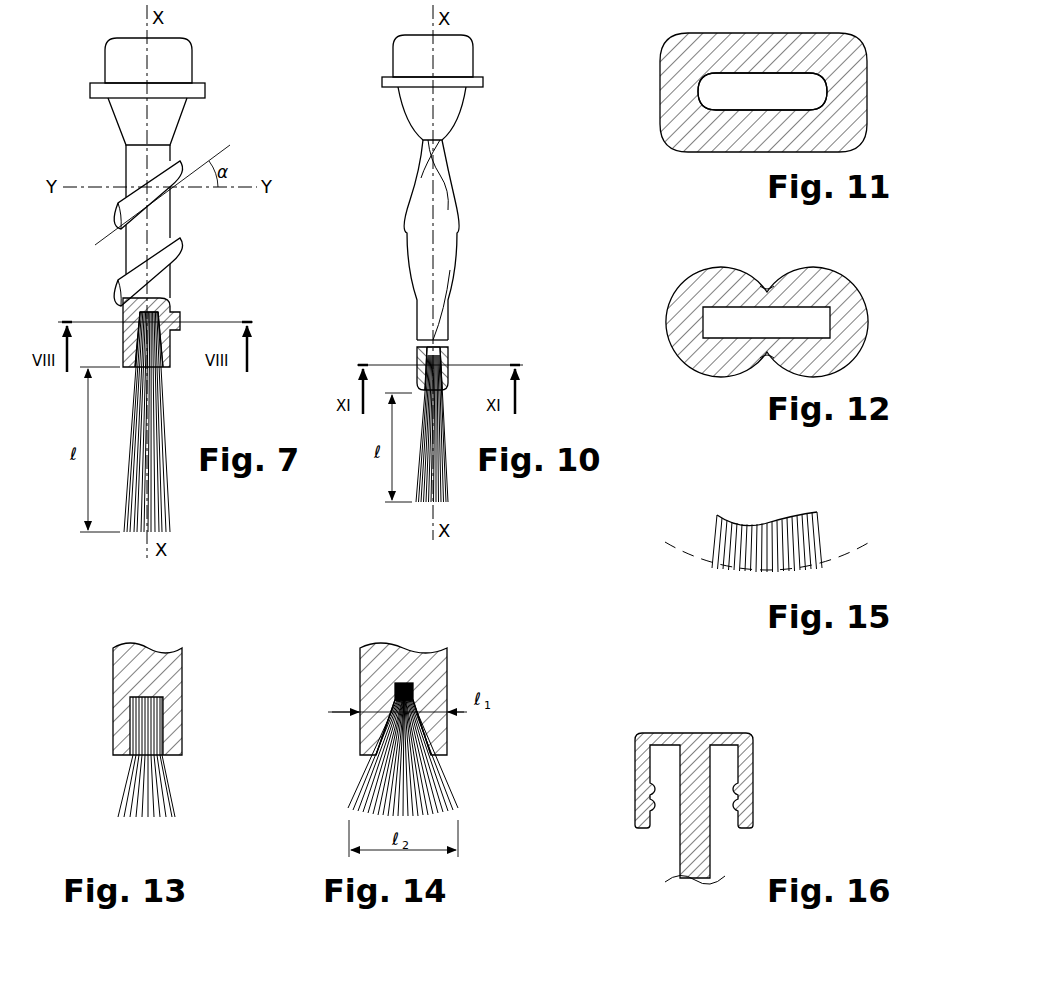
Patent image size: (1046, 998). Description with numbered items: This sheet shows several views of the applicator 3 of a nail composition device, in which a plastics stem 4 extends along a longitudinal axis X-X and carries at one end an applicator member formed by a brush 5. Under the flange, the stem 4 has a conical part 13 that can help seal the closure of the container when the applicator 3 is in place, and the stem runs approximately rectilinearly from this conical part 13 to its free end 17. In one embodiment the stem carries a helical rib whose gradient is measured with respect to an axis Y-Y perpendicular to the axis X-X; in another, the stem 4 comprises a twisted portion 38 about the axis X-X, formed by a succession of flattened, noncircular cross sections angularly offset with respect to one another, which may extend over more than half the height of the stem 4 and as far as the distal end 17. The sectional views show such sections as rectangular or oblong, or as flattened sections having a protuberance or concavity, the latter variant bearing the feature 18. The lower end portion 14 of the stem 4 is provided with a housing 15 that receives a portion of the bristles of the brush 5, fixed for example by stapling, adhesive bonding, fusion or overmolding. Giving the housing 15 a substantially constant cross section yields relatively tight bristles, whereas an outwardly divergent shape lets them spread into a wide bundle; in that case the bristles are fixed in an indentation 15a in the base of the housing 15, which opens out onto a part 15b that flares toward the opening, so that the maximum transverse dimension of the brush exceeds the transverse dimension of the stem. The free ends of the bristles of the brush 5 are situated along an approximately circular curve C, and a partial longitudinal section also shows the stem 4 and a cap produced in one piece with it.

In FIG. 16, the applicator 3 is at (750, 770).
In FIG. 7, the stem 4 is at (125, 113).
In FIG. 10, the stem 4 is at (420, 113).
In FIG. 16, the stem 4 is at (695, 850).
In FIG. 7, the brush 5 is at (155, 488).
In FIG. 10, the brush 5 is at (443, 487).
In FIG. 13, the brush 5 is at (146, 757).
In FIG. 14, the brush 5 is at (403, 758).
In FIG. 7, the conical part 13 is at (163, 122).
In FIG. 10, the conical part 13 is at (450, 100).
In FIG. 7, the lower end portion 14 is at (125, 318).
In FIG. 10, the lower end portion 14 is at (420, 377).
In FIG. 11, the housing 15 is at (763, 92).
In FIG. 14, the indentation 15a is at (415, 690).
In FIG. 14, the flared part 15b is at (380, 735).
In FIG. 7, the free end 17 is at (167, 368).
In FIG. 10, the free end 17 is at (448, 392).
In FIG. 12, the groove 18 is at (767, 285).
In FIG. 10, the twisted portion 38 is at (440, 240).
In FIG. 15, the circular curve C is at (683, 552).